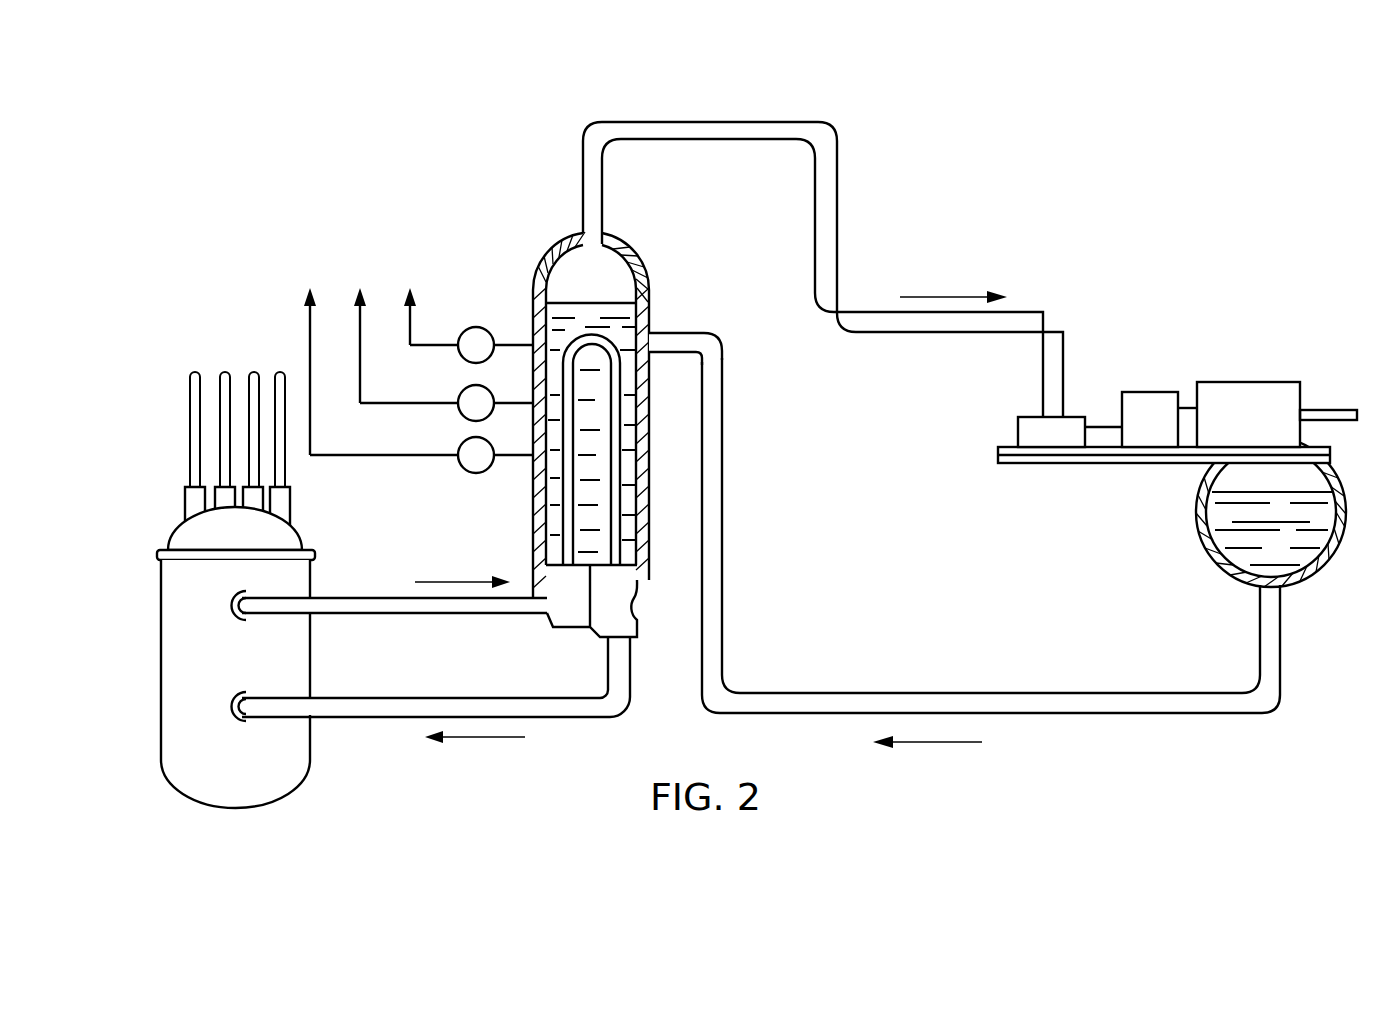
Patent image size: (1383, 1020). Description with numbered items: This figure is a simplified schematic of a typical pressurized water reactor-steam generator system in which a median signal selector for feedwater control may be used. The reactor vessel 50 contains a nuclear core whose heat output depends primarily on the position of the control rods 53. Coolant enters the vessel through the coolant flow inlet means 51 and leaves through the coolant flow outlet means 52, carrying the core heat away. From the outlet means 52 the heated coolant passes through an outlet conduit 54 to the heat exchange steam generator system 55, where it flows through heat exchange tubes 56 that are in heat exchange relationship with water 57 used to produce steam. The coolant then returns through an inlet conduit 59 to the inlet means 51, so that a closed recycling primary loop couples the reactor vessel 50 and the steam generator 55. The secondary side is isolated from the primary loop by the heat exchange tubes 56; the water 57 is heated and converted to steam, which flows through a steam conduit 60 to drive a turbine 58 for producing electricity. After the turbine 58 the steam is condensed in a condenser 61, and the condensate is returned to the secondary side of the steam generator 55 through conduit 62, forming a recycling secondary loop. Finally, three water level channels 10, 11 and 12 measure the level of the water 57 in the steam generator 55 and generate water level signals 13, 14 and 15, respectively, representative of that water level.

The water level channel 10 is at (470, 329).
The water level channel 11 is at (466, 392).
The water level channel 12 is at (465, 443).
The water level signal 13 is at (410, 338).
The water level signal 14 is at (360, 340).
The water level signal 15 is at (310, 342).
The reactor vessel 50 is at (161, 757).
The coolant flow inlet means 51 is at (230, 692).
The coolant flow outlet means 52 is at (226, 598).
The control rods 53 is at (152, 441).
The outlet conduit 54 is at (372, 597).
The heat exchange steam generator system 55 is at (546, 253).
The heat exchange tubes 56 is at (646, 312).
The water 57 is at (608, 302).
The turbine 58 is at (1241, 382).
The inlet conduit 59 is at (553, 698).
The steam conduit 60 is at (838, 200).
The condenser 61 is at (1345, 490).
The conduit 62 is at (1207, 693).